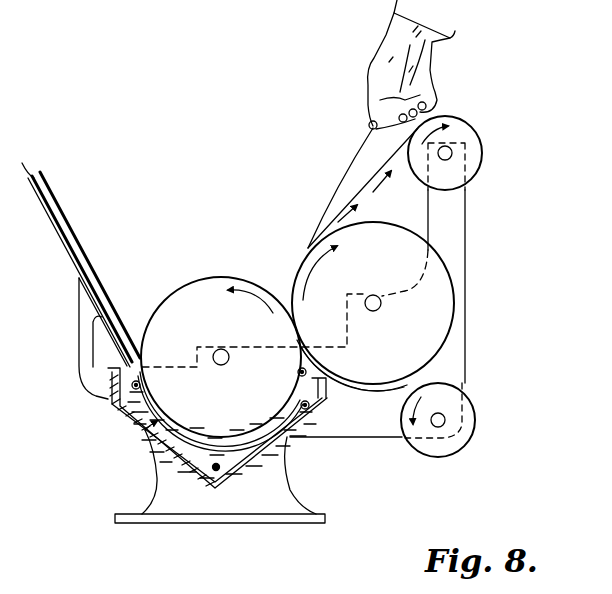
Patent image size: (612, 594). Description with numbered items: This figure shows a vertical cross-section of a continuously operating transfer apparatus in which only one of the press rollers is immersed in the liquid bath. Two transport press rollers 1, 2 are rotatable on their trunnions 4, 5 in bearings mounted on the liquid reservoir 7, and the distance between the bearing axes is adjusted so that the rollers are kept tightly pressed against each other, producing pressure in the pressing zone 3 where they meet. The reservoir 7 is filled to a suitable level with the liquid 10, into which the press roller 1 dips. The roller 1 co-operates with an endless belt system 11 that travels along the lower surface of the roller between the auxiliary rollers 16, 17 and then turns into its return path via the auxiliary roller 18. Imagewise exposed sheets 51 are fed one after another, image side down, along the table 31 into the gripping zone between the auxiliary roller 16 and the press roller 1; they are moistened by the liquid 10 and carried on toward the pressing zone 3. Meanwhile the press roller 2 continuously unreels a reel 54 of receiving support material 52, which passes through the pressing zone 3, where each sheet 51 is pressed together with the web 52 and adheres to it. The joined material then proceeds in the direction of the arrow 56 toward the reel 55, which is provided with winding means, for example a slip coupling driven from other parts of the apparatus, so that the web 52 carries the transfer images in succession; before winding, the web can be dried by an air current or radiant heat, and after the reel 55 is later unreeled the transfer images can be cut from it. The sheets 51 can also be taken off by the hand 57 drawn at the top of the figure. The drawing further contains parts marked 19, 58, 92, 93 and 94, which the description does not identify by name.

The press roller 1 is at (214, 284).
The press roller 2 is at (395, 234).
The pressing zone 3 is at (305, 332).
The trunnion 4 is at (222, 348).
The trunnion 5 is at (364, 305).
The liquid reservoir 7 is at (128, 428).
The liquid 10 is at (290, 437).
The endless belt system 11 is at (145, 432).
The auxiliary roller 16 is at (142, 385).
The auxiliary roller 17 is at (297, 372).
The auxiliary roller 18 is at (299, 405).
The trough bottom fastener 19 is at (214, 471).
The table 31 is at (64, 238).
The imagewise exposed sheet 51 is at (350, 200).
The receiving support material 52 is at (389, 156).
The reel 54 is at (470, 398).
The reel 55 is at (484, 150).
The arrow 56 is at (352, 208).
The hand 57 is at (376, 50).
The direction arrow 58 is at (375, 180).
The support bracket 92 is at (78, 365).
The pedestal 93 is at (156, 492).
The belt 94 is at (466, 212).